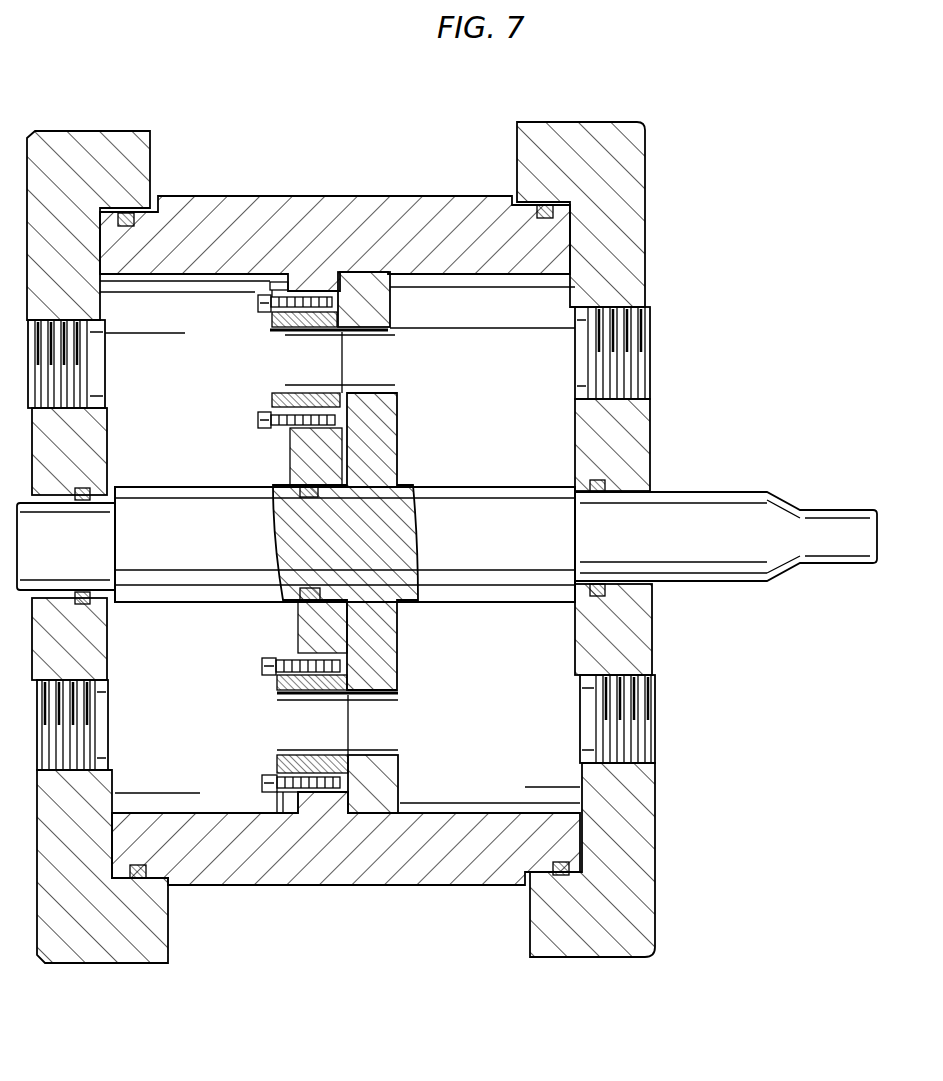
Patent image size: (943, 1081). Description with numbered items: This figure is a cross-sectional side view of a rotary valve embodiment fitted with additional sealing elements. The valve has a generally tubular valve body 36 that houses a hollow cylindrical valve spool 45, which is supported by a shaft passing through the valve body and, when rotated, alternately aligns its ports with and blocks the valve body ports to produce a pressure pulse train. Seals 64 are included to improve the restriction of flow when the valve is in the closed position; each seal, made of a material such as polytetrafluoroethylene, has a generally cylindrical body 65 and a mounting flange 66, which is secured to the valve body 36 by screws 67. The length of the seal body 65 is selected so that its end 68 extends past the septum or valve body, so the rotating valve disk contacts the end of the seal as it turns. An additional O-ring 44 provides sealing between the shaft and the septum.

The valve body 36 is at (378, 875).
The O-ring 44 is at (283, 568).
The valve spool 45 is at (388, 655).
The seal 64 is at (279, 283).
The seal body 65 is at (287, 335).
The mounting flange 66 is at (278, 428).
The screw 67 is at (257, 302).
The seal body end 68 is at (365, 325).